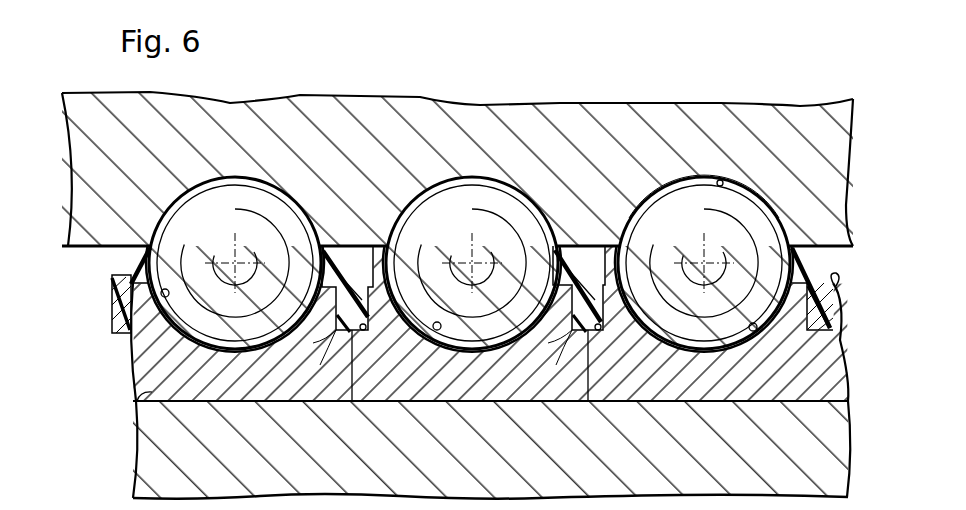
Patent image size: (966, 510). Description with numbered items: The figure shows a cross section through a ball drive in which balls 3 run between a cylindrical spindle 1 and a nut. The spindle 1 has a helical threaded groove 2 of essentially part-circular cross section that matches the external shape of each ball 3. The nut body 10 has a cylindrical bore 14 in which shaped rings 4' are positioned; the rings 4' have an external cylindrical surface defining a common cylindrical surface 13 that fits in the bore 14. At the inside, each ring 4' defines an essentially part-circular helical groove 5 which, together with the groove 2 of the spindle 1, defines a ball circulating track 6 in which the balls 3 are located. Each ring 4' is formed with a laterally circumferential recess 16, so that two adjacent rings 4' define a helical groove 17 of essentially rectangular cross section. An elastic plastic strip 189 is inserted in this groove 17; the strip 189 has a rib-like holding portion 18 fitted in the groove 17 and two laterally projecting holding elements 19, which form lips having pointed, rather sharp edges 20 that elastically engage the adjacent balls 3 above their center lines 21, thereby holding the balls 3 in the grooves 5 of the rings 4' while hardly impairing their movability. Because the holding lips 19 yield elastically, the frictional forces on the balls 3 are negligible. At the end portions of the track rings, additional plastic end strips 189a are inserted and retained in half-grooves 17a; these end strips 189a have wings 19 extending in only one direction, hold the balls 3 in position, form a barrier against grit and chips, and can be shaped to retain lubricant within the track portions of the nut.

The spindle 1 is at (695, 115).
The helical threaded groove 2 is at (722, 180).
The ball 3 is at (203, 187).
The shaped ring 4' is at (490, 348).
The helical groove 5 is at (148, 296).
The ball circulating track 6 is at (840, 280).
The nut body 10 is at (140, 447).
The common cylindrical surface 13 is at (840, 409).
The cylindrical bore 14 is at (137, 393).
The laterally circumferential recess 16 is at (323, 345).
The helical groove 17 is at (369, 330).
The half-groove 17a is at (122, 325).
The rib-like holding portion 18 is at (314, 340).
The holding element 19 is at (328, 245).
The sharp edge 20 is at (290, 213).
The center line 21 is at (216, 256).
The strip 189 is at (345, 336).
The end strip 189a is at (112, 290).